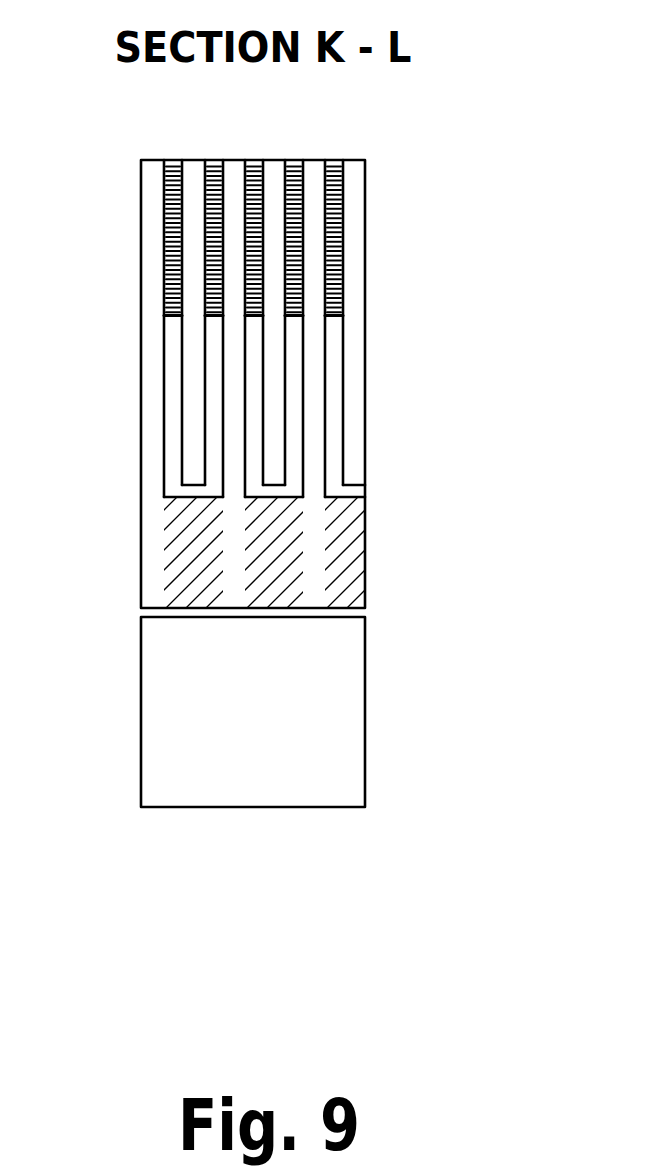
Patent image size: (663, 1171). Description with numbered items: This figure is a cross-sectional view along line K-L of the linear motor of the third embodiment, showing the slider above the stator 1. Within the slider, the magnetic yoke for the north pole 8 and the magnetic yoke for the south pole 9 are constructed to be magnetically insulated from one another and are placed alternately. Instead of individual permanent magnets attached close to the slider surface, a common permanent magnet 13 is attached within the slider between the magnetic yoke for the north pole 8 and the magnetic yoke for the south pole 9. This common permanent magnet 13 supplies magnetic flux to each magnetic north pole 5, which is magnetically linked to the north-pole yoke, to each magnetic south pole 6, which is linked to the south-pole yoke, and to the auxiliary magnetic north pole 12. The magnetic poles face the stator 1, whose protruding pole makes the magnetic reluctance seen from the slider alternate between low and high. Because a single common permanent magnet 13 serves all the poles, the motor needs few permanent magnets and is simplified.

The stator 1 is at (182, 773).
The magnetic north pole 5 is at (233, 597).
The magnetic south pole 6 is at (345, 488).
The magnetic yoke for the pole N 8 is at (233, 217).
The magnetic yoke for the pole S 9 is at (353, 223).
The auxiliary magnetic north pole 12 is at (270, 597).
The common permanent magnet 13 is at (347, 298).